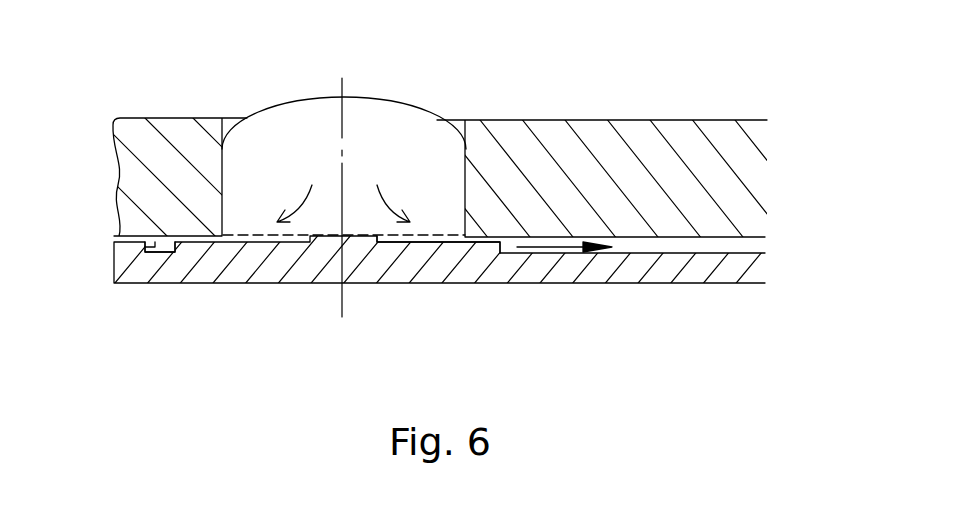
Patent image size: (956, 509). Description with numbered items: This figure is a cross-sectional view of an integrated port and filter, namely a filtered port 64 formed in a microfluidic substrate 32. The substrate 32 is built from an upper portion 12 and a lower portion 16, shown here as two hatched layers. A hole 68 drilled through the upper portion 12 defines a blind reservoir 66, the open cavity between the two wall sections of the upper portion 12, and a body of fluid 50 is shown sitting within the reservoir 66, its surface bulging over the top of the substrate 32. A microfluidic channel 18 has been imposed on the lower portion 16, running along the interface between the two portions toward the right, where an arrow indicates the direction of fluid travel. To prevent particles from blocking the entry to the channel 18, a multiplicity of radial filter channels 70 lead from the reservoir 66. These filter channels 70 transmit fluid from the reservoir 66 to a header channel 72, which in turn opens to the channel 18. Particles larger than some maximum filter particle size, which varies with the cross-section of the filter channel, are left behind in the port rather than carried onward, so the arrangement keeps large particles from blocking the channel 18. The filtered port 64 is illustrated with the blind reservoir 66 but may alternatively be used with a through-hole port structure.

The upper portion 12 is at (647, 120).
The lower portion 16 is at (550, 283).
The microfluidic channel 18 is at (673, 248).
The substrate 32 is at (773, 86).
The fluid 50 is at (383, 100).
The filtered port 64 is at (263, 40).
The blind reservoir 66 is at (388, 177).
The hole 68 is at (465, 177).
The radial filter channels 70 is at (175, 252).
The header channel 72 is at (114, 242).